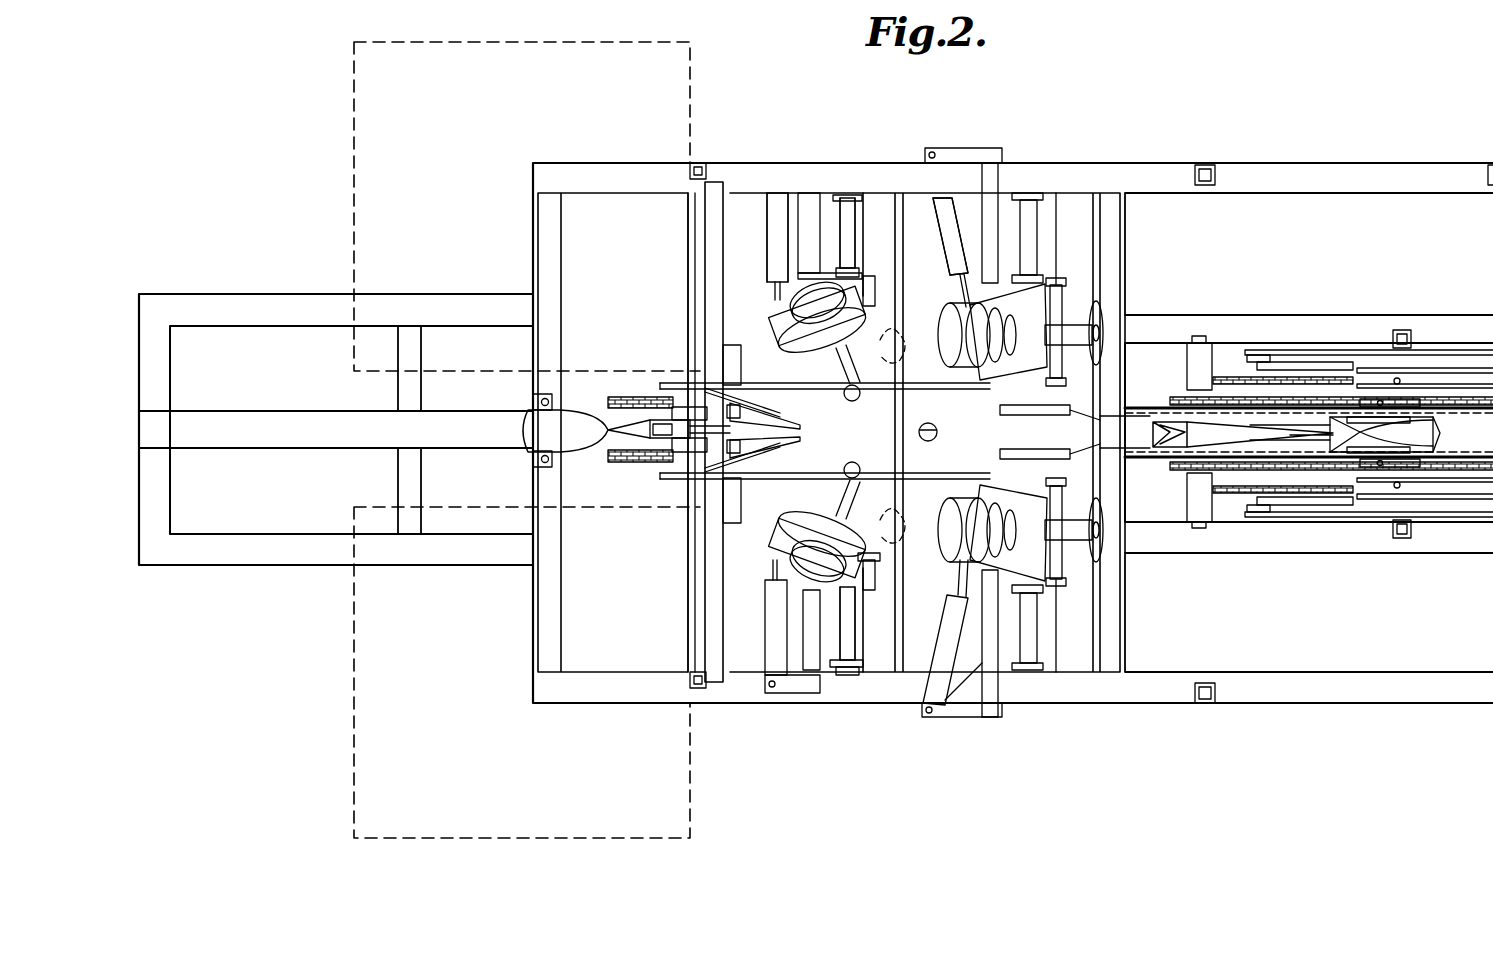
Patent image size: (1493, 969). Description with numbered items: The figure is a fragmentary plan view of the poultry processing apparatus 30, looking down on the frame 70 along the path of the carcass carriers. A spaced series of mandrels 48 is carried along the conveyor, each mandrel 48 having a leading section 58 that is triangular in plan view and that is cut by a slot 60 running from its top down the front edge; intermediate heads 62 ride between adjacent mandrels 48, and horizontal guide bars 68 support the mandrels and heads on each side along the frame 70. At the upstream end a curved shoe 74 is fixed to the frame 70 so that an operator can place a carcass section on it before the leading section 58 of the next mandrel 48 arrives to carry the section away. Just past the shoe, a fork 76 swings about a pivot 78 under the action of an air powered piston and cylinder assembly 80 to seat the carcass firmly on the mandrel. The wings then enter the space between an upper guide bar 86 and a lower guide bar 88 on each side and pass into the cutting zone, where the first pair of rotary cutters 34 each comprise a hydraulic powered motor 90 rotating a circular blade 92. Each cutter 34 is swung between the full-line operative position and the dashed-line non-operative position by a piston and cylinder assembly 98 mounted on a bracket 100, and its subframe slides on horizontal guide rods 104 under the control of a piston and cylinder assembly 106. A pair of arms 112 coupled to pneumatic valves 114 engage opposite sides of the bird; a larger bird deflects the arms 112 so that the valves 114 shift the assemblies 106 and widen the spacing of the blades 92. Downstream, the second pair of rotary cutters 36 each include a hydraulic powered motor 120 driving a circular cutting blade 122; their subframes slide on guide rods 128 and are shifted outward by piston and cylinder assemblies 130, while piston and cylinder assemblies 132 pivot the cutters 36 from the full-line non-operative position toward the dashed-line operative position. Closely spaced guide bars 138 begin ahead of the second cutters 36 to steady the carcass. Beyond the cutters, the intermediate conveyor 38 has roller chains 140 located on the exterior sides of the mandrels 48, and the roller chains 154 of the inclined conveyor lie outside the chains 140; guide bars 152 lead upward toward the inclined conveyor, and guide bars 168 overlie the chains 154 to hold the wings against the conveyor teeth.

The poultry processing apparatus 30 is at (1045, 115).
The first pair of rotary cutters 34 is at (828, 260).
The second pair of rotary cutters 36 is at (1055, 225).
The intermediate conveyor 38 is at (1182, 392).
The mandrel 48 is at (1060, 395).
The leading section 58 is at (1090, 446).
The slot 60 is at (1150, 440).
The intermediate head 62 is at (1280, 455).
The horizontal guide bar 68 is at (590, 410).
The frame 70 is at (1287, 703).
The curved shoe 74 is at (545, 425).
The fork 76 is at (700, 496).
The pivot 78 is at (660, 400).
The piston and cylinder assembly 80 is at (700, 395).
The upper guide bar 86 is at (708, 378).
The lower guide bar 88 is at (620, 455).
The hydraulic powered motor 90 is at (850, 315).
The circular blade 92 is at (901, 431).
The piston and cylinder assembly 98 is at (762, 250).
The bracket 100 is at (800, 693).
The horizontal guide rod 104 is at (855, 605).
The piston and cylinder assembly 106 is at (885, 578).
The arm 112 is at (760, 400).
The pneumatic valve 114 is at (738, 345).
The hydraulic powered motor 120 is at (948, 318).
The circular cutting blade 122 is at (1105, 318).
The horizontal guide rod 128 is at (1030, 615).
The piston and cylinder assembly 130 is at (1065, 582).
The piston and cylinder assembly 132 is at (930, 235).
The third pair of guide bars 138 is at (928, 420).
The roller chain 140 is at (1178, 398).
The guide bar 152 is at (1436, 430).
The roller chain 154 is at (1275, 373).
The guide bar 168 is at (1420, 380).